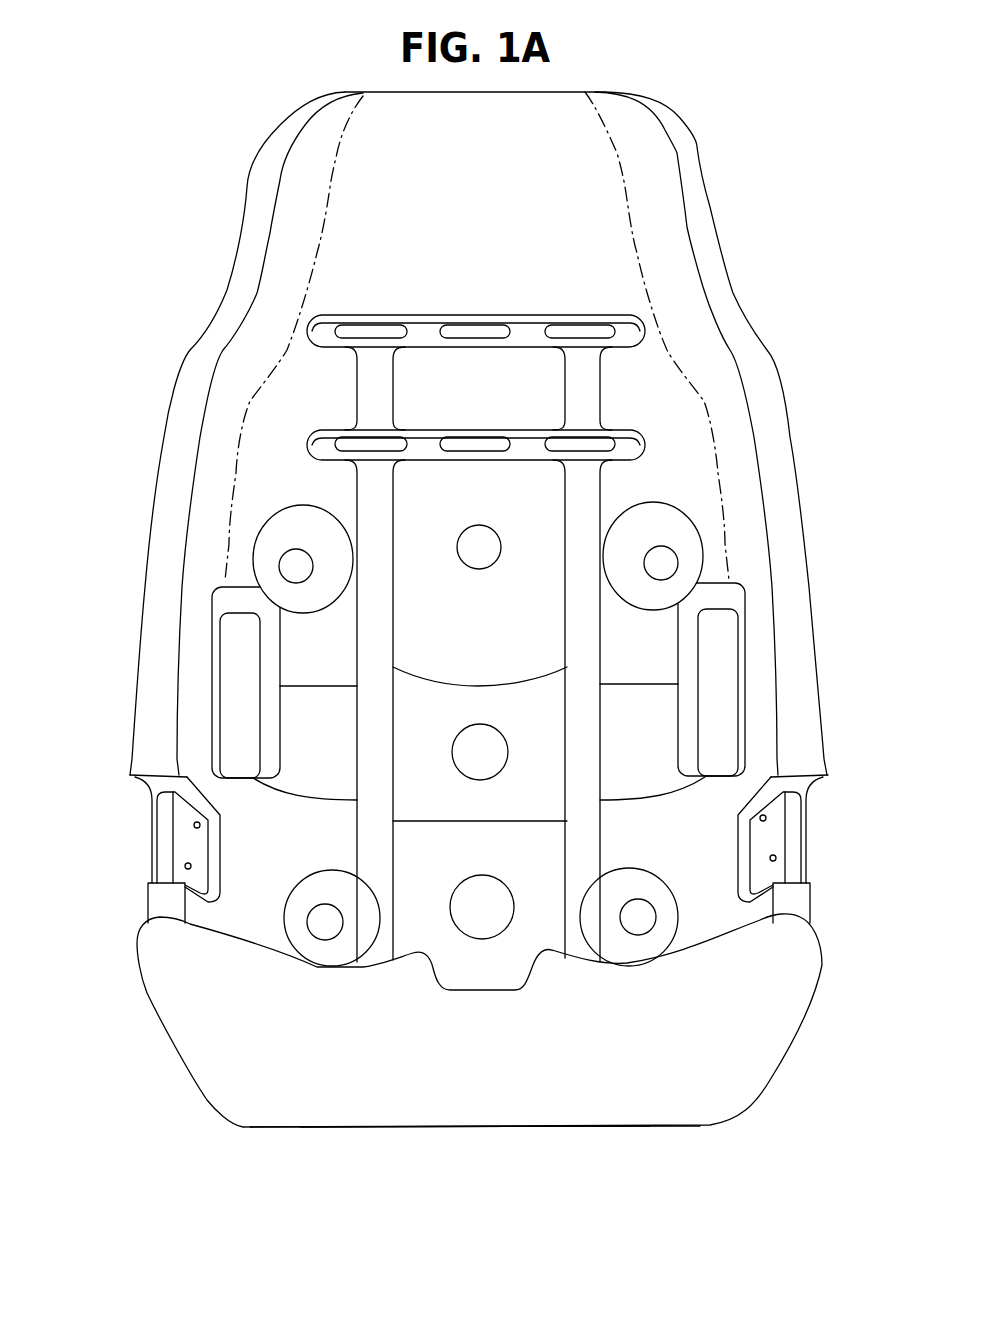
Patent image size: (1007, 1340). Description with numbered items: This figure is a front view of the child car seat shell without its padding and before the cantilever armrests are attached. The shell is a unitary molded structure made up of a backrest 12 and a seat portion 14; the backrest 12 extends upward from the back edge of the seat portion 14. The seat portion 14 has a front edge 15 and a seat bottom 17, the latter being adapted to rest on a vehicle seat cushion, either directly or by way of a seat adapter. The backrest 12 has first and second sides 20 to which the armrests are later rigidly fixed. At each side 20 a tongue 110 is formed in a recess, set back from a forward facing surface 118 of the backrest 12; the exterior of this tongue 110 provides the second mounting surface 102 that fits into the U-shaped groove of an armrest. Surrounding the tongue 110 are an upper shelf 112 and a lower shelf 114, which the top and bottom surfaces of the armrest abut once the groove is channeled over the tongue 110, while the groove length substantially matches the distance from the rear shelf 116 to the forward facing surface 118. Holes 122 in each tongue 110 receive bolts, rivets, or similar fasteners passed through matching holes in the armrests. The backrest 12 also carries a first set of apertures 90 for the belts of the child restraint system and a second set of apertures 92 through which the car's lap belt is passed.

The backrest 12 is at (562, 117).
The seat portion 14 is at (798, 943).
The front edge 15 is at (288, 1057).
The seat bottom 17 is at (415, 1135).
The sides 20 is at (143, 587).
The first set of apertures 90 is at (395, 327).
The second set of apertures 92 is at (241, 703).
The second mounting surface 102 is at (183, 847).
The tongue 110 is at (160, 832).
The upper shelf 112 is at (147, 785).
The lower shelf 114 is at (142, 875).
The rear shelf 116 is at (222, 843).
The forward facing surface 118 is at (177, 771).
The holes 122 is at (194, 825).